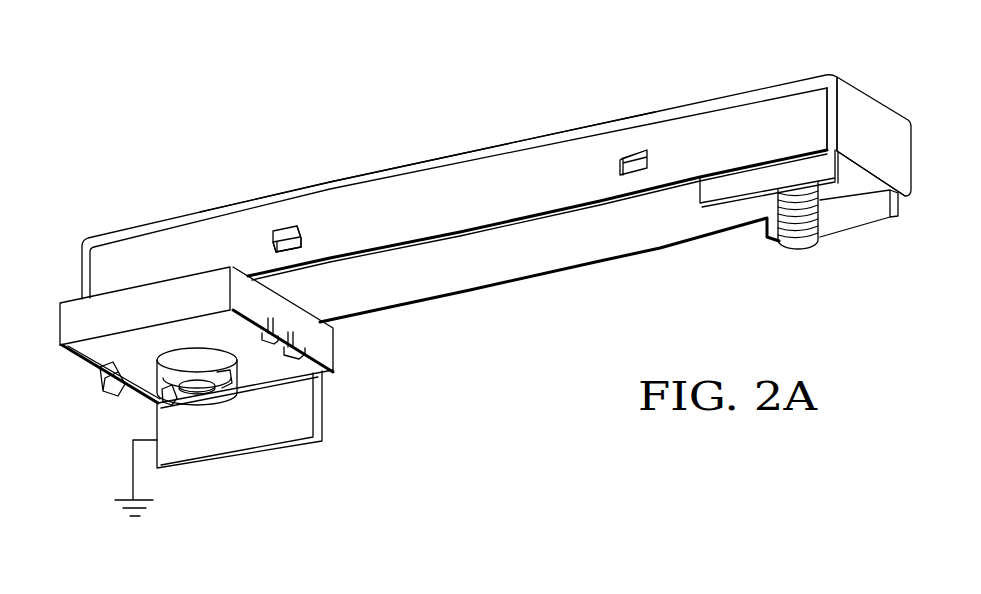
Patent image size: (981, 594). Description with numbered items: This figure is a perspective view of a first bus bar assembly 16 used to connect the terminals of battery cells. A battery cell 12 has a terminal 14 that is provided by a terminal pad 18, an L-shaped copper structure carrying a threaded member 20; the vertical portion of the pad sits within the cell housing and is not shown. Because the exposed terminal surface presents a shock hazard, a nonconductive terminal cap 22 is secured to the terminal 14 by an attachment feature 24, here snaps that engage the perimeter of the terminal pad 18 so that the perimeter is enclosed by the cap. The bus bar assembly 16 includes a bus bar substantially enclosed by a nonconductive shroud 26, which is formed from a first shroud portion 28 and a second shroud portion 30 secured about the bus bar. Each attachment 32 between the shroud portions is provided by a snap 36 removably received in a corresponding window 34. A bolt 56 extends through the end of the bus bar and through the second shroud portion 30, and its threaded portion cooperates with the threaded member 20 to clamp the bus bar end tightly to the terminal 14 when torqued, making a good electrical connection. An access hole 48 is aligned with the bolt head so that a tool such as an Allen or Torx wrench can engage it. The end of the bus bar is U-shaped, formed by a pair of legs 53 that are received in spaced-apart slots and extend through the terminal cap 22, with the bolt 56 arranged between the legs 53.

The battery cell 12 is at (151, 514).
The terminal 14 is at (281, 460).
The bus bar assembly 16 is at (676, 85).
The terminal pad 18 is at (77, 360).
The threaded member 20 is at (140, 398).
The terminal cap 22 is at (328, 337).
The attachment feature 24 is at (107, 390).
The shroud 26 is at (870, 78).
The first shroud portion 28 is at (410, 166).
The second shroud portion 30 is at (523, 283).
The attachment 32 is at (274, 219).
The window 34 is at (302, 236).
The snap 36 is at (273, 240).
The access hole 48 is at (345, 582).
The leg 53 is at (737, 190).
The bolt 56 is at (770, 218).